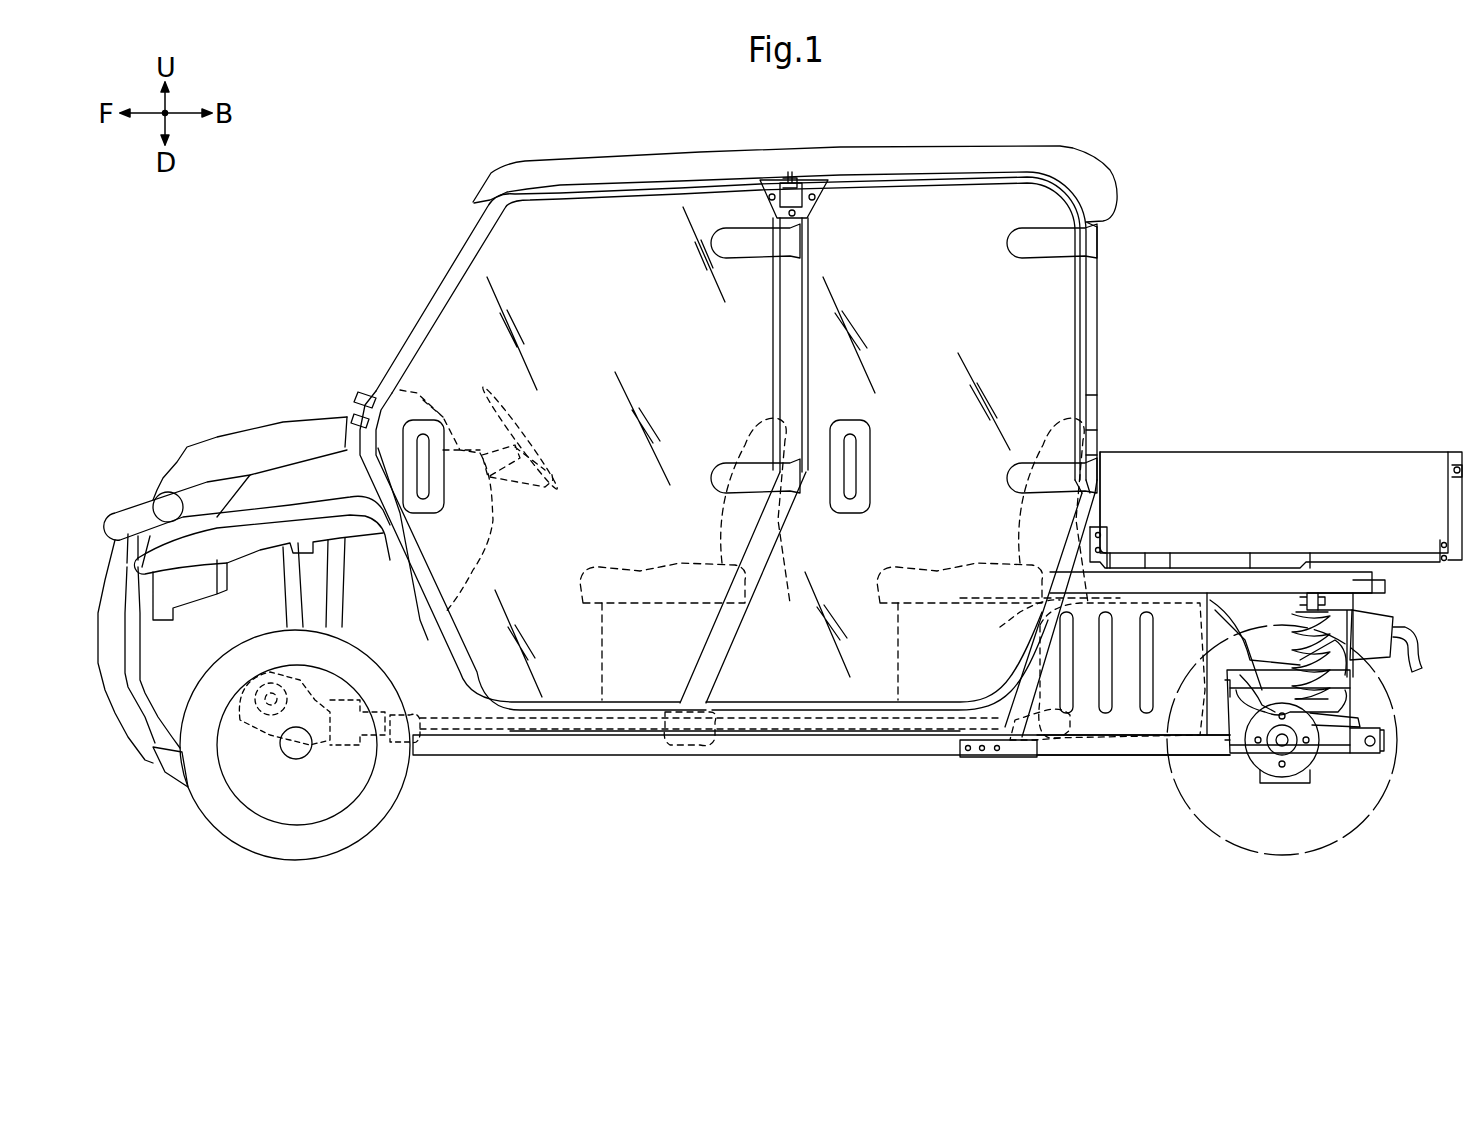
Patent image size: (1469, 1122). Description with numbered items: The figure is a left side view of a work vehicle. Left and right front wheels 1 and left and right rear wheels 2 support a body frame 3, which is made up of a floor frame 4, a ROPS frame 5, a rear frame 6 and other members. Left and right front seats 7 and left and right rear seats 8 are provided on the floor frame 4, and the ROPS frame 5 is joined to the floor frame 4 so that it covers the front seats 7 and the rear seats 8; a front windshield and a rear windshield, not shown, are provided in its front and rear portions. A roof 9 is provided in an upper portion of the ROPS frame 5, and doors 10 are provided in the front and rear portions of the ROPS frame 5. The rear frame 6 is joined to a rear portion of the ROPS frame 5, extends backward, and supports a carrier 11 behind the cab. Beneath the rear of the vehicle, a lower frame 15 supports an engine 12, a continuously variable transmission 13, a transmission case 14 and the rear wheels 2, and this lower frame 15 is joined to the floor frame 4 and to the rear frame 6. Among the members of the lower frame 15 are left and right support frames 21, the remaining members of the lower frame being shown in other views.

The front wheels 1 is at (277, 848).
The rear wheels 2 is at (1300, 858).
The body frame 3 is at (758, 780).
The floor frame 4 is at (826, 748).
The ROPS frame 5 is at (1103, 286).
The rear frame 6 is at (1362, 585).
The front seats 7 is at (680, 562).
The rear seats 8 is at (978, 562).
The roof 9 is at (880, 152).
The doors 10 is at (530, 263).
The carrier 11 is at (1330, 465).
The engine 12 is at (1165, 600).
The continuously variable transmission 13 is at (1032, 730).
The transmission case 14 is at (1255, 655).
The lower frame 15 is at (1120, 770).
The support frames 21 is at (1342, 628).